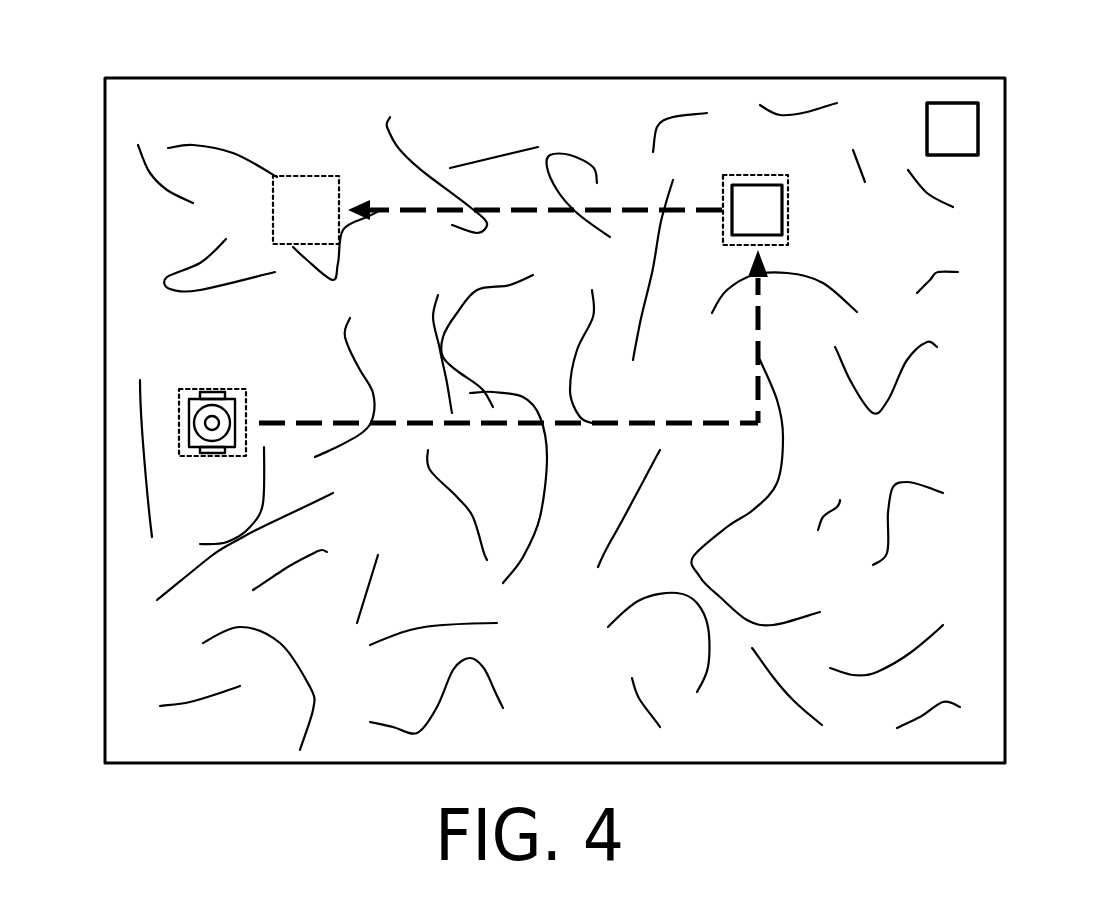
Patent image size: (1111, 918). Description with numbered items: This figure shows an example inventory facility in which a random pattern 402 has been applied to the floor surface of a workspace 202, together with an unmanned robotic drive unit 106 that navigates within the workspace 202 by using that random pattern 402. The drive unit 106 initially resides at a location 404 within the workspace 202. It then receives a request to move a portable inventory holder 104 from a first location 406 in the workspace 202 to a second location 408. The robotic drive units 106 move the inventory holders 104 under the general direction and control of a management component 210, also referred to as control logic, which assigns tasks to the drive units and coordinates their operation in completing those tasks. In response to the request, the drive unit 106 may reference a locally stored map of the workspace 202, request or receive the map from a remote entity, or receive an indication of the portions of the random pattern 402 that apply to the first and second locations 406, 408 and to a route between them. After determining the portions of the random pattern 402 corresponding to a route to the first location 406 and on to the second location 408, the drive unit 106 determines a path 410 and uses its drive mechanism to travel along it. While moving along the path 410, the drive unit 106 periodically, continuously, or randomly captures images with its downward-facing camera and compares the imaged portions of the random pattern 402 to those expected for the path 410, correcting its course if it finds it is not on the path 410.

The workspace 202 is at (170, 68).
The random pattern 402 is at (984, 243).
The path 410 is at (503, 200).
The second location 408 is at (302, 176).
The first location 406 is at (789, 216).
The inventory holder 104 is at (768, 190).
The management component 210 is at (938, 116).
The location 404 is at (190, 457).
The drive unit 106 is at (197, 400).